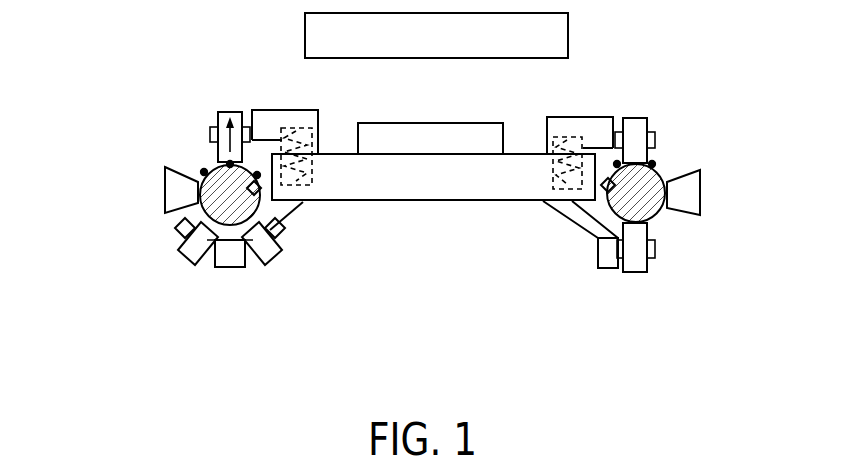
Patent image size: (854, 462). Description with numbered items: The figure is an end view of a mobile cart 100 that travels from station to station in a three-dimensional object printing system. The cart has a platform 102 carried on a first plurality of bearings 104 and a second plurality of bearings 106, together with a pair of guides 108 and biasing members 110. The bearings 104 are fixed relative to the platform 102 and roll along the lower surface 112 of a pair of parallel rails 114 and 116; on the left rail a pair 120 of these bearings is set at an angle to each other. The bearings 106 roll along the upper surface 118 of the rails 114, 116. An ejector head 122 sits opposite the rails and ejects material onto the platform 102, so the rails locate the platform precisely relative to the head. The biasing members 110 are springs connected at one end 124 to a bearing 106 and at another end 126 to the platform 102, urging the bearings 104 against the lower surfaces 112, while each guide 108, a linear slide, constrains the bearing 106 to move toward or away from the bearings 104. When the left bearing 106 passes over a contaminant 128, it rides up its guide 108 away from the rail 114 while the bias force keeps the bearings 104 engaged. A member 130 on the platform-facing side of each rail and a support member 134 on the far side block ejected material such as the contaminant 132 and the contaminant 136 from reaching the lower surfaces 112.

The mobile cart 100 is at (442, 300).
The platform 102 is at (335, 153).
The first plurality of bearings 104 is at (186, 258).
The second plurality of bearings 106 is at (223, 112).
The guide 108 is at (308, 132).
The biasing member 110 is at (302, 158).
The lower surface 112 is at (166, 224).
The rail 114 is at (202, 170).
The rail 116 is at (665, 170).
The upper surface 118 is at (141, 123).
The pair of bearings 120 is at (232, 318).
The ejector head 122 is at (305, 35).
The end of biasing member 124 is at (287, 130).
The another end of biasing member 126 is at (290, 152).
The contaminant 128 is at (201, 146).
The member 130 is at (272, 252).
The contaminant 132 is at (260, 177).
The member 134 is at (166, 208).
The contaminant 136 is at (167, 184).